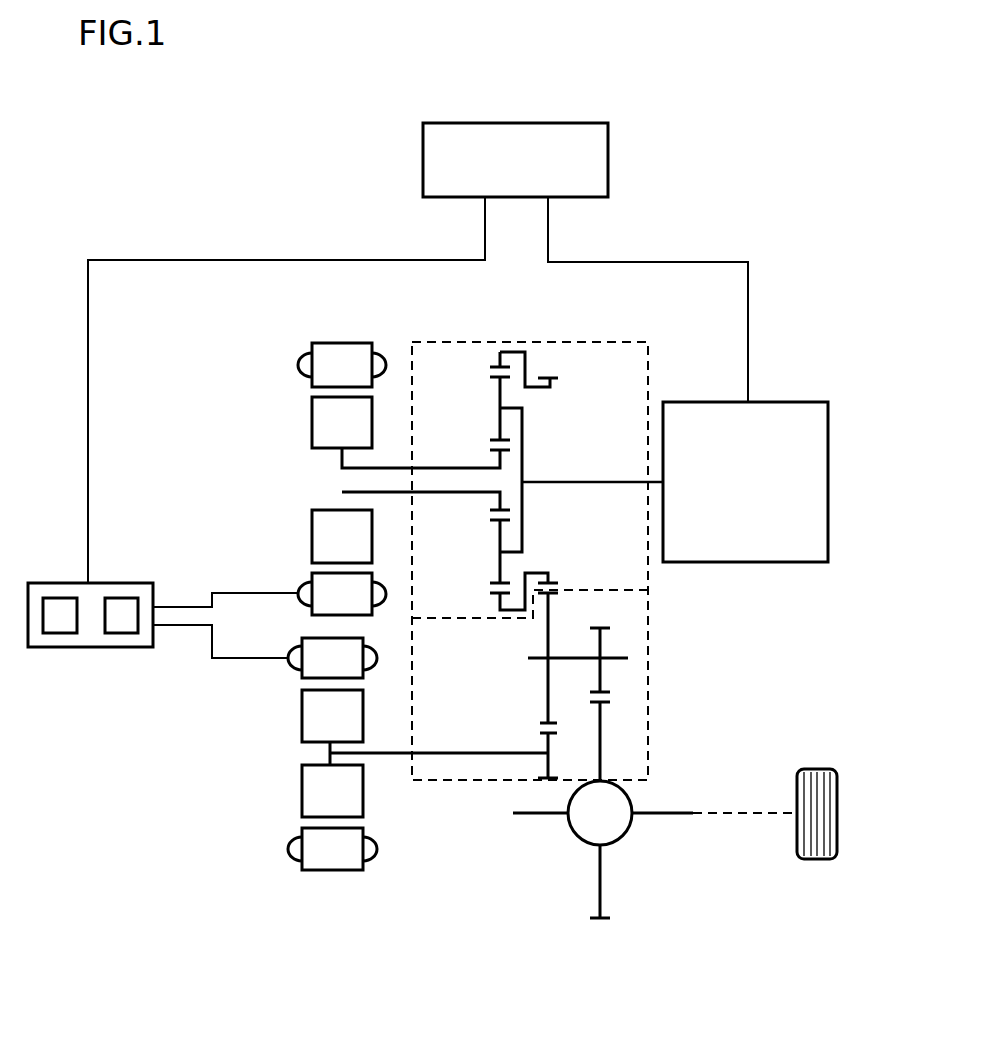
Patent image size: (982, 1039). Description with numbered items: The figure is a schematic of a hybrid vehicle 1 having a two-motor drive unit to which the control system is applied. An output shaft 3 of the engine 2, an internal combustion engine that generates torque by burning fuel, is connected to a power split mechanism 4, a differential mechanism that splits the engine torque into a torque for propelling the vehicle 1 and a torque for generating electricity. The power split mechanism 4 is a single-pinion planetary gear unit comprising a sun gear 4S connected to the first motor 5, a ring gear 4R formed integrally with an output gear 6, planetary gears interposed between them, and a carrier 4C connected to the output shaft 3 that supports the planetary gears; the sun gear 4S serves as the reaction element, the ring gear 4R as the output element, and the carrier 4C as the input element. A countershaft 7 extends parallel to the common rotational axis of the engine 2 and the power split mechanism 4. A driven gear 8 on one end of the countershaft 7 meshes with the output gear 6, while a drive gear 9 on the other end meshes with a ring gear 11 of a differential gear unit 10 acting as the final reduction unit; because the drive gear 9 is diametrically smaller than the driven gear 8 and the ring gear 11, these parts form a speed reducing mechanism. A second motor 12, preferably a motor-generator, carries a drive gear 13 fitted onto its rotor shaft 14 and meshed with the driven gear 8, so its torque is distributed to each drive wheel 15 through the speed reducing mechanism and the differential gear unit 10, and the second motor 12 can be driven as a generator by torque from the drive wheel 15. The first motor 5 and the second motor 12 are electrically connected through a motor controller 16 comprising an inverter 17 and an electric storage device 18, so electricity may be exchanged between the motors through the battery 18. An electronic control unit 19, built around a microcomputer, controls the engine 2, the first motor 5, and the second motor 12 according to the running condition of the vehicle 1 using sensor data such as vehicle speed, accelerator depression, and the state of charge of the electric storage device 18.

The hybrid vehicle 1 is at (797, 130).
The engine 2 is at (800, 402).
The output shaft 3 is at (597, 482).
The power split mechanism 4 is at (618, 341).
The ring gear 4R is at (493, 362).
The sun gear 4S is at (493, 458).
The carrier 4C is at (523, 432).
The first motor 5 is at (348, 342).
The output gear 6 is at (543, 370).
The countershaft 7 is at (620, 660).
The driven gear 8 is at (546, 720).
The drive gear 9 is at (605, 628).
The differential gear unit 10 is at (630, 827).
The ring gear 11 is at (605, 703).
The second motor 12 is at (327, 872).
The drive gear 13 is at (545, 737).
The rotor shaft 14 is at (438, 755).
The drive wheel 15 is at (813, 768).
The motor controller 16 is at (163, 618).
The inverter 17 is at (55, 633).
The electric storage device 18 is at (123, 633).
The electronic control unit 19 is at (528, 123).